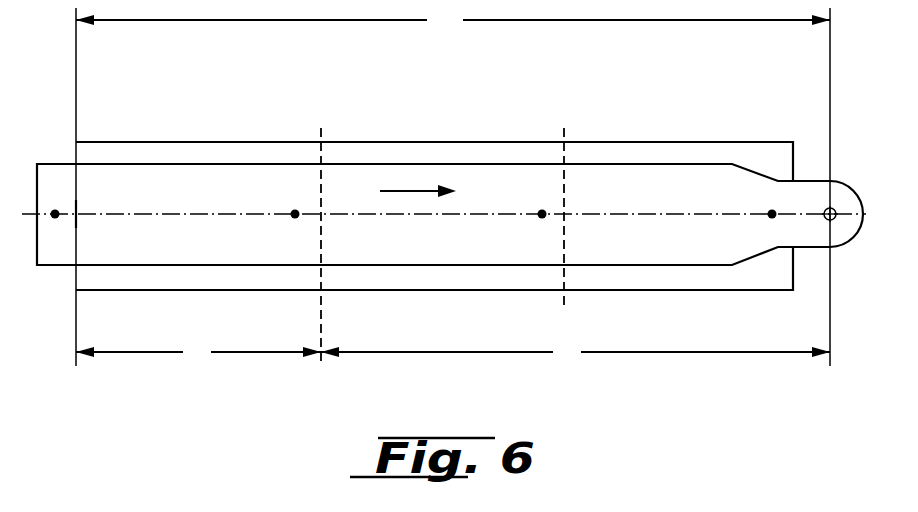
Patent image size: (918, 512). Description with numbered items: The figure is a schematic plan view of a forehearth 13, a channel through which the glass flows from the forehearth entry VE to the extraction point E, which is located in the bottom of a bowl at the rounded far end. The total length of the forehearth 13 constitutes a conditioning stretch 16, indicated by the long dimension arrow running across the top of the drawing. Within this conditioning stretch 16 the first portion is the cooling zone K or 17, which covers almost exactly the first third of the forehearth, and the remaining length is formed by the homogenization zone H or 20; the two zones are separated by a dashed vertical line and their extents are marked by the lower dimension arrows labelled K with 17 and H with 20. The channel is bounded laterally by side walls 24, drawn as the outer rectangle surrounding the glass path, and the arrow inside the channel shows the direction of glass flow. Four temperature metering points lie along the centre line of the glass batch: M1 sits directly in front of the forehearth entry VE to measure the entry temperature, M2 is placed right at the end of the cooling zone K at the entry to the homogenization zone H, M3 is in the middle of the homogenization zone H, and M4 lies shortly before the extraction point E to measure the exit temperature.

The forehearth 13 is at (680, 284).
The side walls 24 is at (445, 150).
The conditioning stretch 16 is at (453, 186).
The cooling zone K is at (198, 354).
The cooling zone 17 is at (148, 381).
The homogenization zone H is at (575, 354).
The homogenization zone 20 is at (685, 381).
The temperature metering point M1 is at (55, 208).
The temperature metering point M2 is at (295, 209).
The temperature metering point M3 is at (541, 209).
The temperature metering point M4 is at (771, 209).
The forehearth entry VE is at (78, 205).
The extraction point E is at (834, 208).